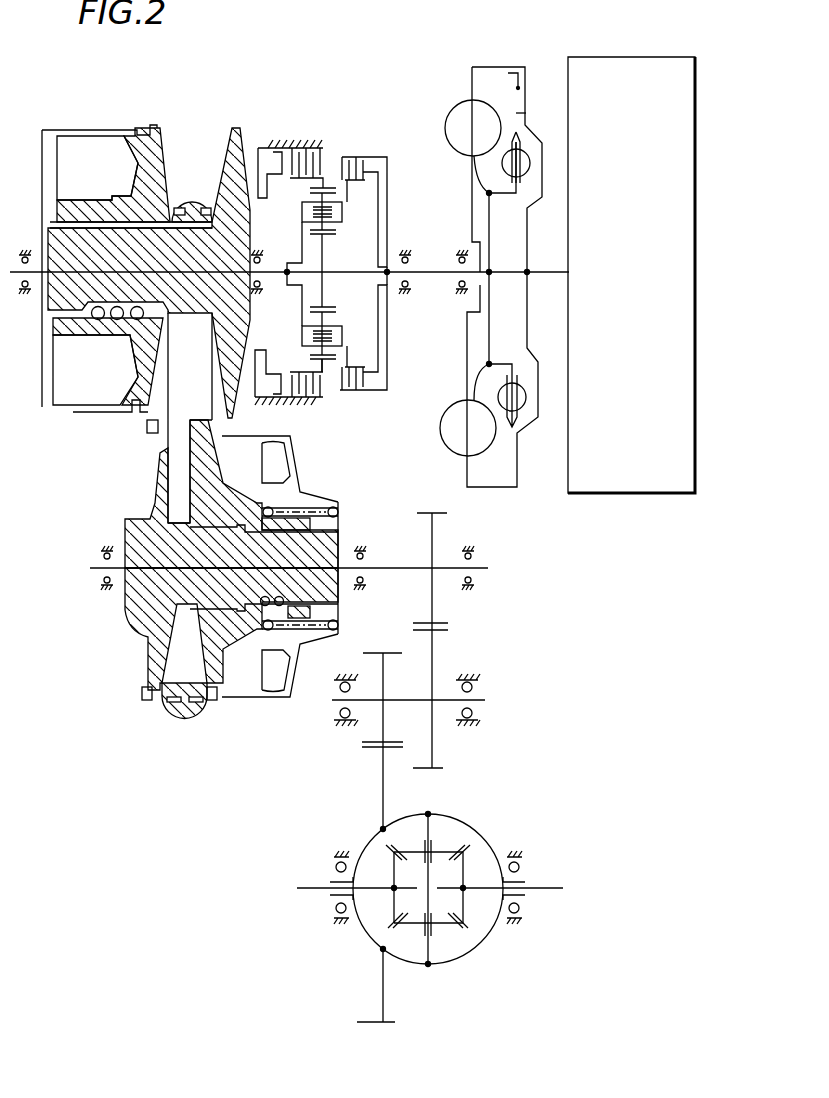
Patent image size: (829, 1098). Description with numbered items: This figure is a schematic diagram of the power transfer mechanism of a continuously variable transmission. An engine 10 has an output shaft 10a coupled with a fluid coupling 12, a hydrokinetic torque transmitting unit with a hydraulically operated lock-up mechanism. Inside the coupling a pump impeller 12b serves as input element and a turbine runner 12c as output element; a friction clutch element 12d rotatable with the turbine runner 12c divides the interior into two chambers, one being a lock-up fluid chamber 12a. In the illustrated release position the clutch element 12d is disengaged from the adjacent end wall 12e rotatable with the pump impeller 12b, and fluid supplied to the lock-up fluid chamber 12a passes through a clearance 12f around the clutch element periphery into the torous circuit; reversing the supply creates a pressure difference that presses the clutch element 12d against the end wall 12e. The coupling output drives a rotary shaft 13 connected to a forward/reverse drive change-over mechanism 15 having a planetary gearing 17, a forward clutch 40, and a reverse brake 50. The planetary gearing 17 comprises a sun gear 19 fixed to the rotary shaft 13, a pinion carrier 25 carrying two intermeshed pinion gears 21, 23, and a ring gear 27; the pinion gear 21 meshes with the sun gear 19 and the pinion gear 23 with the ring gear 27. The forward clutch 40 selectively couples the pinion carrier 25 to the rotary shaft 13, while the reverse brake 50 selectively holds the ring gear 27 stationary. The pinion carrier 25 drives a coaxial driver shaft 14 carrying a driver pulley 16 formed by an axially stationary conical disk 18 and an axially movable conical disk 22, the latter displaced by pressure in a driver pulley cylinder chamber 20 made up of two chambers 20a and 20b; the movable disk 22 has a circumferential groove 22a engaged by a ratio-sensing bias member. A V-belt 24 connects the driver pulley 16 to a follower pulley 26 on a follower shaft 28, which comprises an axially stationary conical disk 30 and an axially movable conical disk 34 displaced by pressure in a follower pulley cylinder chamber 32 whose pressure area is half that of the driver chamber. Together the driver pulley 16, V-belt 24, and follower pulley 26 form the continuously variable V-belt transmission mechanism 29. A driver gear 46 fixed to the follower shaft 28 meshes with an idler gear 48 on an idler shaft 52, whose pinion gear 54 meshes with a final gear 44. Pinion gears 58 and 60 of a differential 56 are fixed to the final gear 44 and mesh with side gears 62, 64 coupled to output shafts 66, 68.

The engine 10 is at (648, 57).
The output shaft 10a is at (548, 278).
The fluid coupling 12 is at (480, 275).
The lock-up fluid chamber 12a is at (513, 343).
The pump impeller 12b is at (445, 431).
The turbine runner 12c is at (486, 435).
The friction clutch element 12d is at (521, 113).
The end wall 12e is at (523, 82).
The clearance 12f is at (508, 487).
The rotary shaft 13 is at (432, 278).
The driver shaft 14 is at (301, 324).
The forward/reverse drive change-over mechanism 15 is at (350, 246).
The driver pulley 16 is at (236, 122).
The planetary gearing 17 is at (366, 214).
The axially stationary conical disk 18 is at (241, 132).
The sun gear 19 is at (323, 292).
The driver pulley cylinder chamber 20 is at (75, 157).
The chamber 20a is at (43, 402).
The chamber 20b is at (126, 130).
The pinion gear 21 is at (337, 310).
The axially movable conical disk 22 is at (160, 131).
The circumferential groove 22a is at (162, 150).
The pinion gear 23 is at (337, 356).
The V-belt 24 is at (152, 413).
The pinion carrier 25 is at (302, 331).
The follower pulley 26 is at (166, 720).
The ring gear 27 is at (326, 365).
The follower shaft 28 is at (398, 573).
The continuously variable V-belt transmission mechanism 29 is at (132, 497).
The axially stationary conical disk 30 is at (157, 643).
The follower pulley cylinder chamber 32 is at (238, 677).
The axially movable conical disk 34 is at (213, 698).
The forward clutch 40 is at (369, 150).
The final gear 44 is at (390, 1023).
The driver gear 46 is at (424, 512).
The idler gear 48 is at (430, 735).
The reverse brake 50 is at (327, 154).
The idler shaft 52 is at (443, 699).
The pinion gear 54 is at (382, 723).
The differential 56 is at (448, 888).
The pinion gear 58 is at (447, 923).
The pinion gear 60 is at (412, 851).
The side gear 62 is at (392, 903).
The side gear 64 is at (464, 870).
The output shaft 66 is at (305, 889).
The output shaft 68 is at (562, 889).